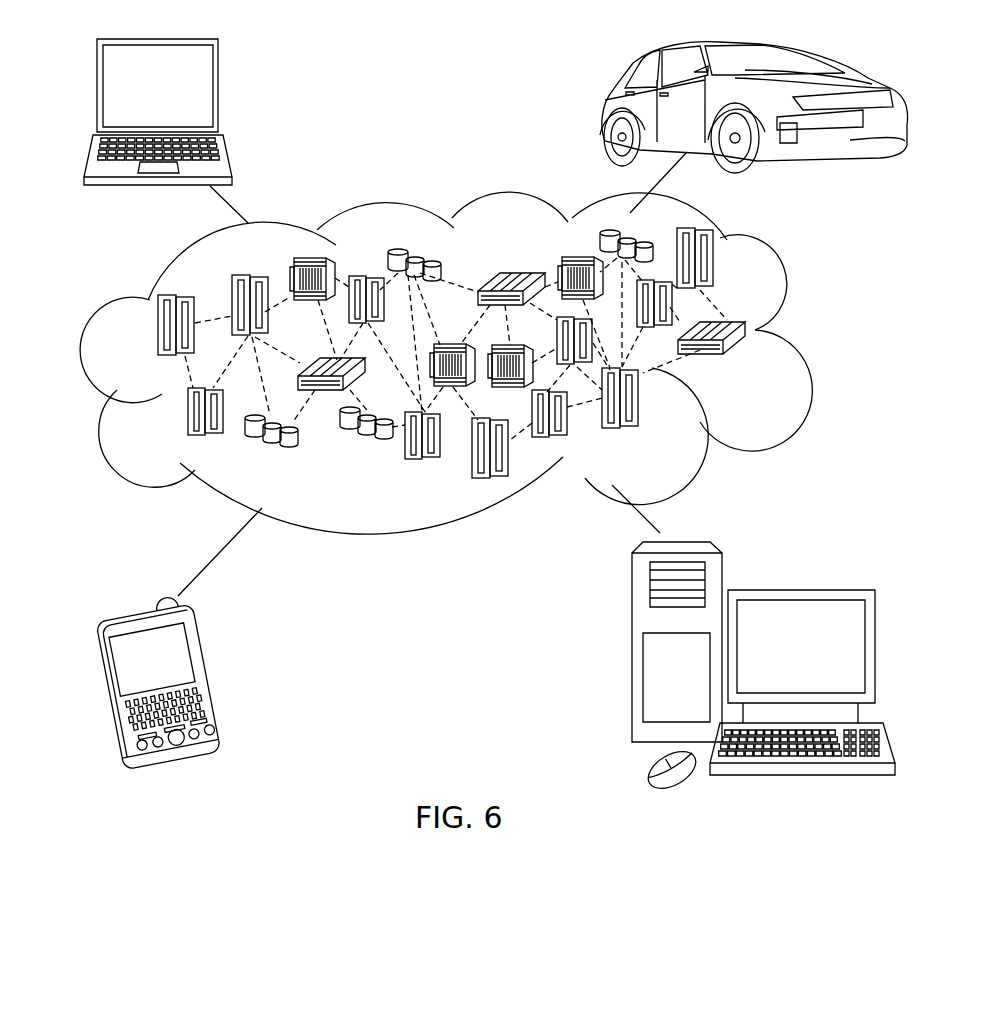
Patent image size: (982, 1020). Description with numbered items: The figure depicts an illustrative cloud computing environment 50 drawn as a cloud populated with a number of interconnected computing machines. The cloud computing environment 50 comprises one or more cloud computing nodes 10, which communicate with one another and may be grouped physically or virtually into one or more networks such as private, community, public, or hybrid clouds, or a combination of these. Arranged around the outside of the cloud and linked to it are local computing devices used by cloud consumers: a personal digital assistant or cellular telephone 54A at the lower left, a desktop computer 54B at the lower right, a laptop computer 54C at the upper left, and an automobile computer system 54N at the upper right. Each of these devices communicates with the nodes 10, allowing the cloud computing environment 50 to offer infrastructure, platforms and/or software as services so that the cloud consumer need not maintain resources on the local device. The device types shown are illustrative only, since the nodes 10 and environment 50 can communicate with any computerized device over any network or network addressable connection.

The laptop computer 54C is at (218, 92).
The automobile computer system 54N is at (603, 108).
The personal digital assistant (PDA) or cellular telephone 54A is at (207, 672).
The desktop computer 54B is at (800, 590).
The cloud computing environment 50 is at (466, 363).
The cloud computing node 10 is at (747, 359).